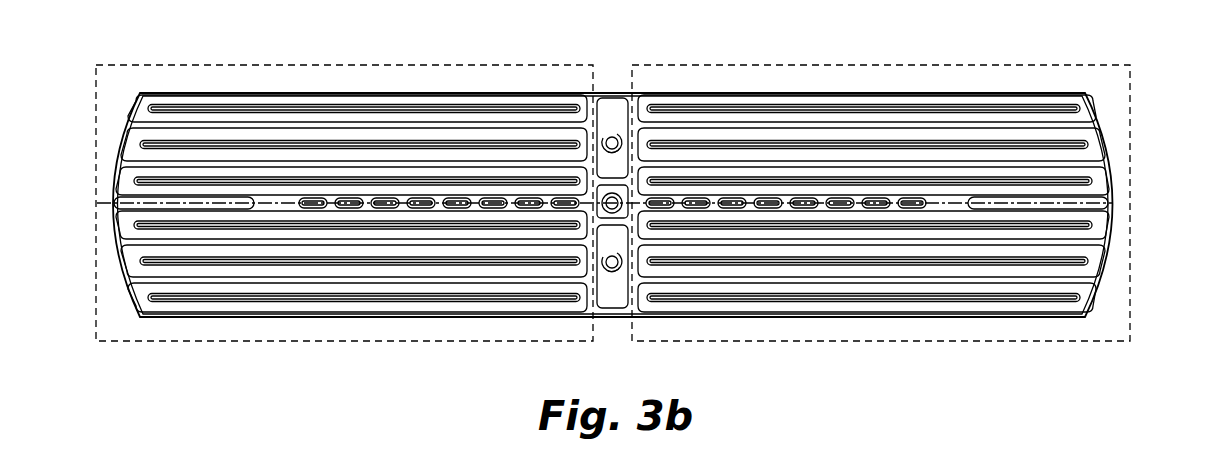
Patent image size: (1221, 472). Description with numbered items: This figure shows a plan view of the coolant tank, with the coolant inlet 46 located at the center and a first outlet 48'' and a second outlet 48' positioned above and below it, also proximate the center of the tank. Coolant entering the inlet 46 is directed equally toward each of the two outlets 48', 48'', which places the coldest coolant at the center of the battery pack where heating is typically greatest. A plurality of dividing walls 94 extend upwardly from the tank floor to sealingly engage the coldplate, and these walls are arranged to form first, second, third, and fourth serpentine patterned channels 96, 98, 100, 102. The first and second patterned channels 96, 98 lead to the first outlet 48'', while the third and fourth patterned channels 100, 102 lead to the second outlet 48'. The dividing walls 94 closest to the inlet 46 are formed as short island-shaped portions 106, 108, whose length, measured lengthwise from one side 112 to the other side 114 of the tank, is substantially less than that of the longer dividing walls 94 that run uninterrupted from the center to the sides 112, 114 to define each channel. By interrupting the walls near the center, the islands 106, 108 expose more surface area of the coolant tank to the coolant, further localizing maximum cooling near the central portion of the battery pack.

The inlet 46 is at (606, 196).
The second outlet 48' is at (636, 311).
The first outlet 48'' is at (589, 94).
The dividing walls 94 is at (128, 283).
The first serpentine patterned channel 96 is at (335, 65).
The second serpentine patterned channel 98 is at (875, 65).
The third serpentine patterned channel 100 is at (872, 343).
The fourth serpentine patterned channel 102 is at (328, 342).
The island-shaped dividing wall 106 is at (298, 191).
The island-shaped dividing wall 108 is at (931, 191).
The side of coolant tank 112 is at (115, 240).
The other side of coolant tank 114 is at (1113, 203).